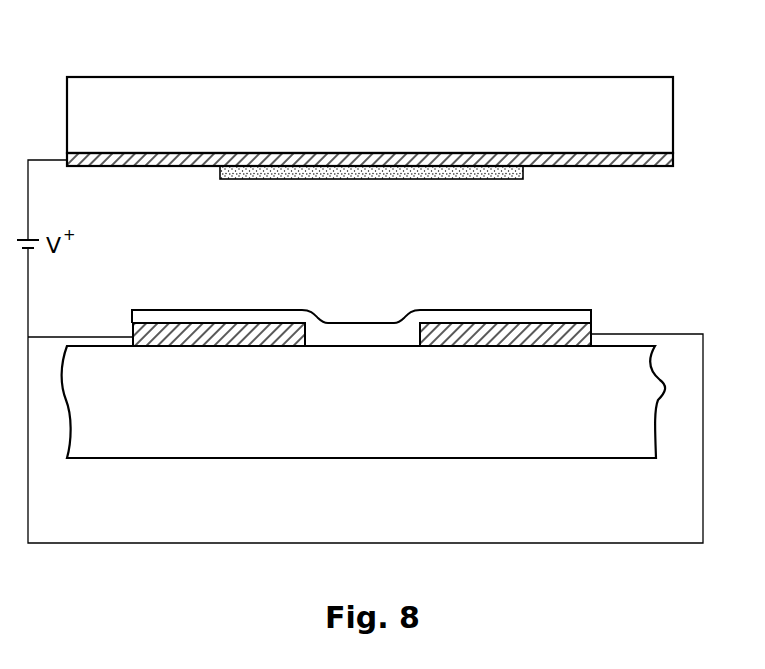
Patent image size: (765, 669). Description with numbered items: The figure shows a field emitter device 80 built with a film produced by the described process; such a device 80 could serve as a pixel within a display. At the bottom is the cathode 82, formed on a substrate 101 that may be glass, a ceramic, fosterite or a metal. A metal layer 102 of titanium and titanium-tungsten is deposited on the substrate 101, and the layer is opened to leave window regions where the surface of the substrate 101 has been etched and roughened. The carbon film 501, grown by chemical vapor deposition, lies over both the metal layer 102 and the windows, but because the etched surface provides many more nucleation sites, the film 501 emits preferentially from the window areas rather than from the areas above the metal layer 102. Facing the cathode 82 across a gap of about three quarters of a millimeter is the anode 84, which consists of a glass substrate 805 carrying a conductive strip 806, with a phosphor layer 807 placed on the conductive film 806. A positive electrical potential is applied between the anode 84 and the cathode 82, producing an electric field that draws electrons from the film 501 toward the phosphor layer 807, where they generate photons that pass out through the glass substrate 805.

The anode 84 is at (589, 73).
The substrate 805 is at (364, 75).
The conductive strip 806 is at (645, 170).
The phosphor layer 807 is at (492, 183).
The field emitter device 80 is at (698, 273).
The film 501 is at (348, 322).
The metal layer 102 is at (133, 326).
The substrate 101 is at (297, 462).
The cathode 82 is at (163, 469).